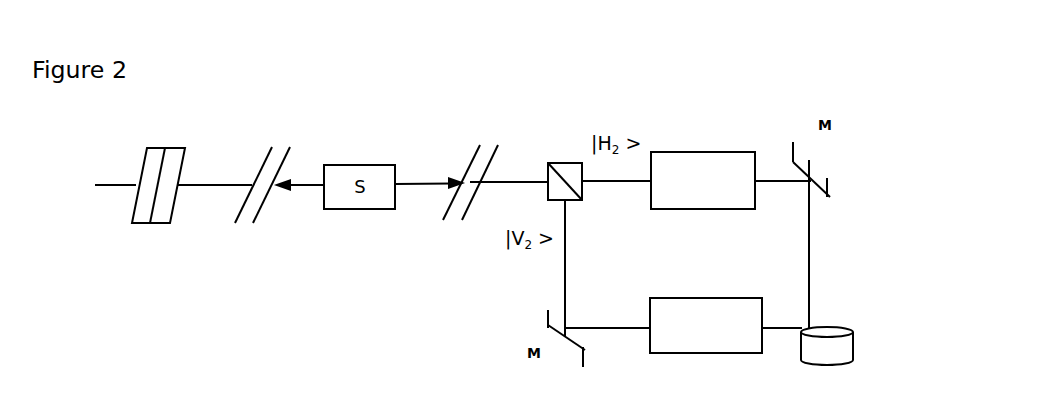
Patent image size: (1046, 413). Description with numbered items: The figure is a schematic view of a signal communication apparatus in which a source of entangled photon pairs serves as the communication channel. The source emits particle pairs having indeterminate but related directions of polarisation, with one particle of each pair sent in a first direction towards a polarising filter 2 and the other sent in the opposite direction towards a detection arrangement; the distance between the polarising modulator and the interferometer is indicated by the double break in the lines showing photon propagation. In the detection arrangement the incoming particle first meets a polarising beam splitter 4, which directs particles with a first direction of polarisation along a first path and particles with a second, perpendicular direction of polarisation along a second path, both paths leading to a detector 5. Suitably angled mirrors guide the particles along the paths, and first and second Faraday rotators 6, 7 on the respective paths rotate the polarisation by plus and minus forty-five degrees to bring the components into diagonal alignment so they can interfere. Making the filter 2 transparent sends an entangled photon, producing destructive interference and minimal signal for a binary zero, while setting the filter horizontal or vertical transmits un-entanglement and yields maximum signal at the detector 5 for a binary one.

The polarising filter 2 is at (153, 232).
The polarising beam splitter 4 is at (553, 153).
The detector 5 is at (857, 350).
The first Faraday rotator 6 is at (703, 180).
The second Faraday rotator 7 is at (706, 325).